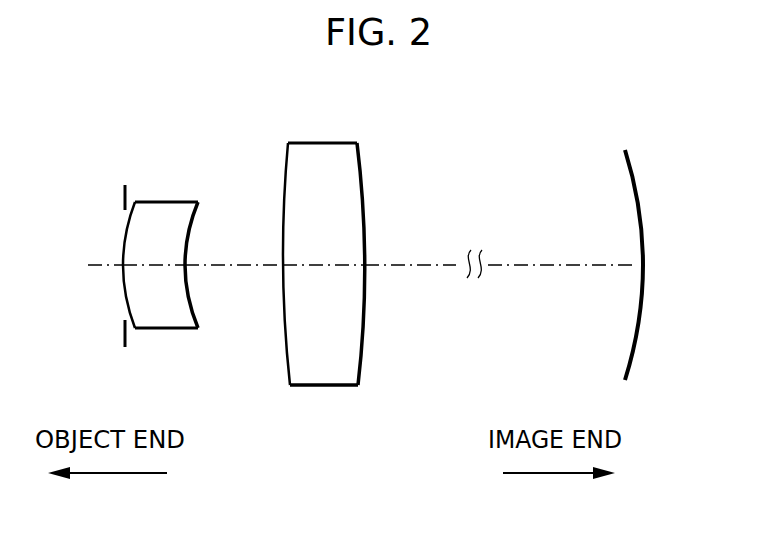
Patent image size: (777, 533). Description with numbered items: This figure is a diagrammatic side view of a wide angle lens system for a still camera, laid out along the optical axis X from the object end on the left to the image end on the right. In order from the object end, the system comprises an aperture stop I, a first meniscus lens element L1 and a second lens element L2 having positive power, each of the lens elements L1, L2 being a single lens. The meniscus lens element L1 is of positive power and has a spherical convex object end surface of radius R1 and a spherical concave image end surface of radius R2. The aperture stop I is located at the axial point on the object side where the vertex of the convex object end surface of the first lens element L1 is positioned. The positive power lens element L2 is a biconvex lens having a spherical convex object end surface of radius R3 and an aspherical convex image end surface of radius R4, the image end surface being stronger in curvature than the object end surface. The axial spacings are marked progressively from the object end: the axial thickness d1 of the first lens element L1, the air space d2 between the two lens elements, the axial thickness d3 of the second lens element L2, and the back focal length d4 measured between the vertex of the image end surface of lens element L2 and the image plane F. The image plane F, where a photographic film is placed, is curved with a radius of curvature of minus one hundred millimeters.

The aperture stop I is at (122, 197).
The first meniscus lens element L1 is at (156, 260).
The second lens element L2 is at (325, 264).
The first lens surface radius R1 is at (124, 288).
The second lens surface radius R2 is at (195, 312).
The third lens surface radius R3 is at (288, 362).
The fourth lens surface radius R4 is at (360, 360).
The first axial distance d1 is at (143, 265).
The second axial distance d2 is at (228, 266).
The third axial distance d3 is at (338, 265).
The back focal length distance d4 is at (500, 260).
The image plane F is at (622, 157).
The optical axis X is at (361, 261).